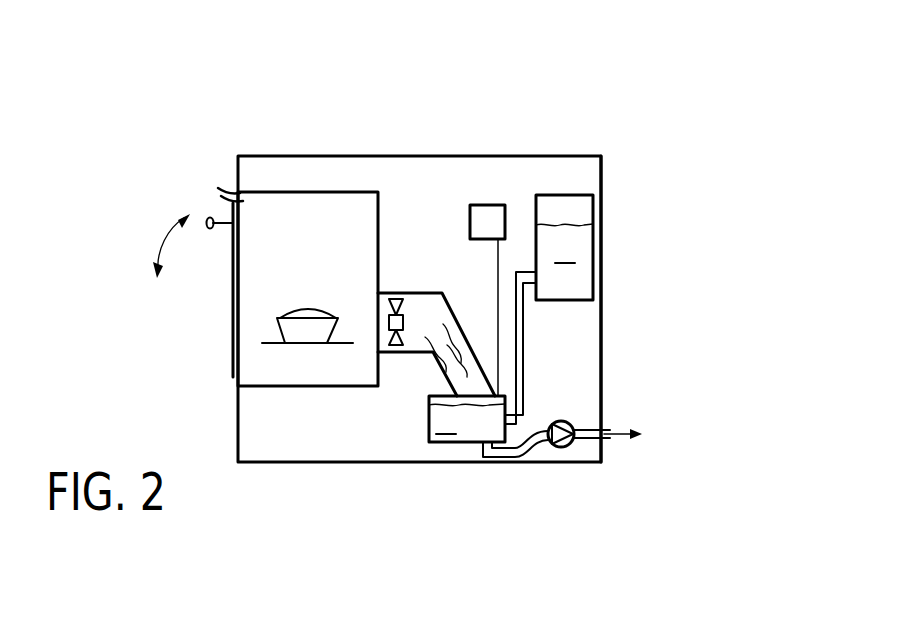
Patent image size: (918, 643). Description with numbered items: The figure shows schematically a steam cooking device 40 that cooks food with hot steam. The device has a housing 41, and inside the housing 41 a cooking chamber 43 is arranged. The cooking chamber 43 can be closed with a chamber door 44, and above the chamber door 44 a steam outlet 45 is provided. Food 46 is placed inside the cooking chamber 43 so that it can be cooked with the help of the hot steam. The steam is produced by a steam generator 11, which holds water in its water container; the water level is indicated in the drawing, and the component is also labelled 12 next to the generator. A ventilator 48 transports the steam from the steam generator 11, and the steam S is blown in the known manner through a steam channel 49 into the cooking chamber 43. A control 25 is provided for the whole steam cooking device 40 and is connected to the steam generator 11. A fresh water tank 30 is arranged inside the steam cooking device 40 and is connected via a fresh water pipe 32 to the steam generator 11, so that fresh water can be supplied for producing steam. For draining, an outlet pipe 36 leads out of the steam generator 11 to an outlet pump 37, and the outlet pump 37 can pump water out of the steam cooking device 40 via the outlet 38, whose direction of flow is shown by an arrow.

The steam cooking device 40 is at (632, 120).
The housing 41 is at (603, 185).
The cooking chamber 43 is at (321, 192).
The chamber door 44 is at (233, 300).
The steam outlet 45 is at (212, 185).
The food 46 is at (324, 296).
The ventilator 48 is at (421, 305).
The steam channel 49 is at (476, 345).
The steam S is at (434, 367).
The control 25 is at (486, 205).
The fresh water tank 30 is at (588, 275).
The fresh water pipe 32 is at (526, 378).
The condensate tank 12 is at (468, 434).
The steam generator 11 is at (490, 453).
The outlet pipe 36 is at (541, 447).
The outlet pump 37 is at (585, 425).
The outlet 38 is at (606, 442).